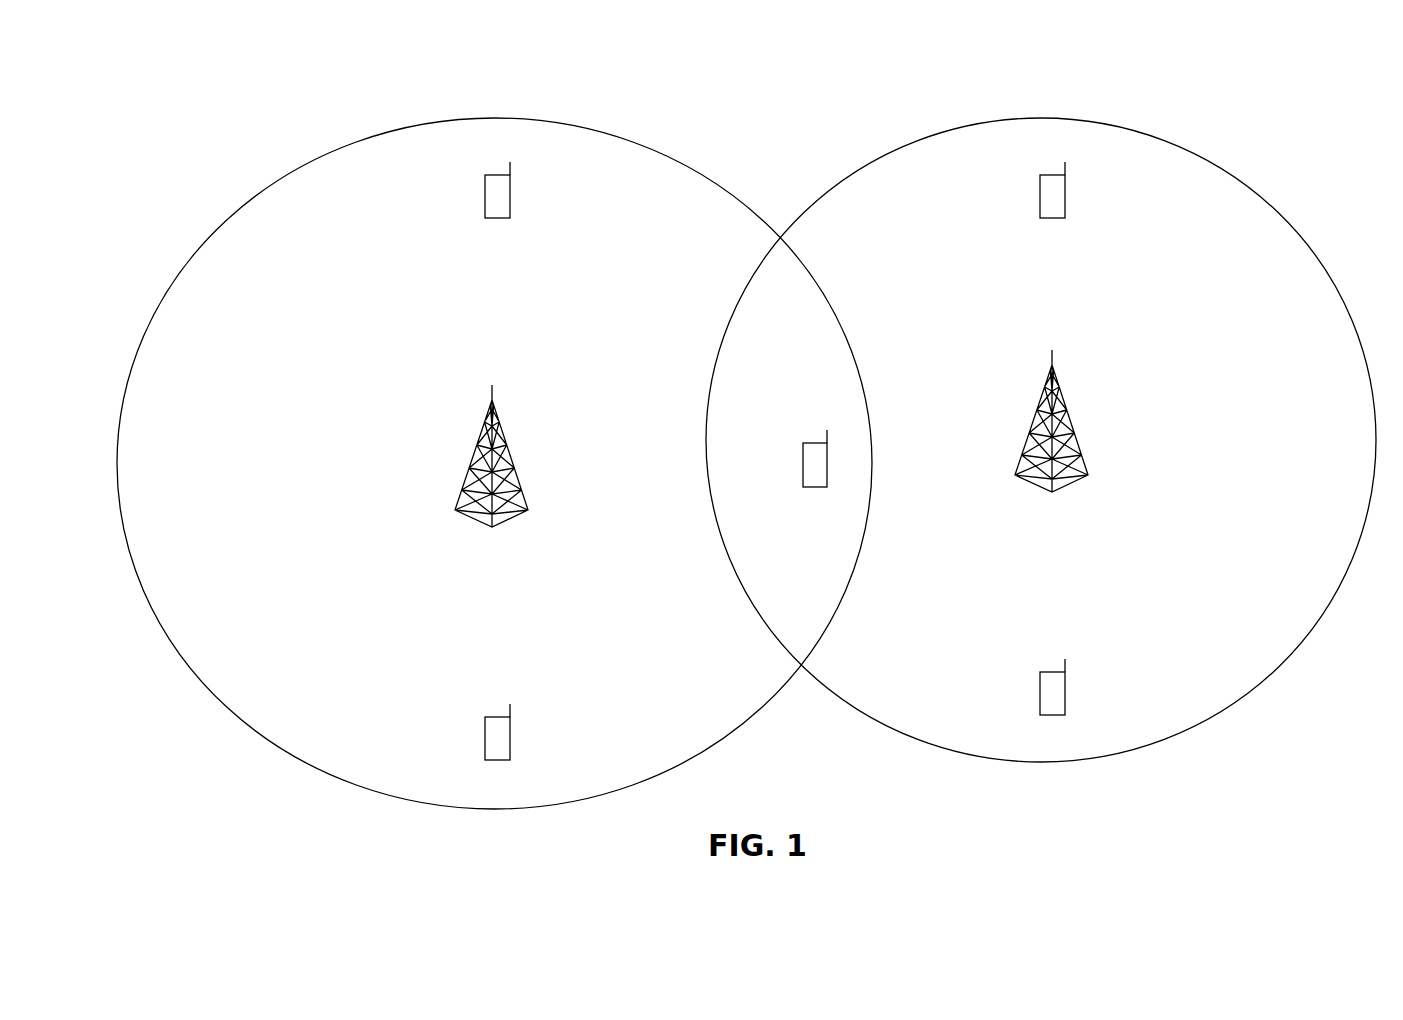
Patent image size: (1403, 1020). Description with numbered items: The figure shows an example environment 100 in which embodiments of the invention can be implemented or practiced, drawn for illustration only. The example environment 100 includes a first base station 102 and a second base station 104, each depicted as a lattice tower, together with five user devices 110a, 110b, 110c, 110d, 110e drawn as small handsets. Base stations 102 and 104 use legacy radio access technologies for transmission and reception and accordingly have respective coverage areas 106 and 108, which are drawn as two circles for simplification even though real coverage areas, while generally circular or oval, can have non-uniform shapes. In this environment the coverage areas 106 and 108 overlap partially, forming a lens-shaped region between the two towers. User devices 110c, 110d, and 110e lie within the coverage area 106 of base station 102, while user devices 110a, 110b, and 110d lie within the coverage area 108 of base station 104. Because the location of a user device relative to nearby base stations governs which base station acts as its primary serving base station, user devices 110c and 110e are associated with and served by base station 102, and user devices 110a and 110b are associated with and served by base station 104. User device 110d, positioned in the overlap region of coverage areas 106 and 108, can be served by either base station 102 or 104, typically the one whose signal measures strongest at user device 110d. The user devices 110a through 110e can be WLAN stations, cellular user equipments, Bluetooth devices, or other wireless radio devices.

The example environment 100 is at (1312, 114).
The first base station 102 is at (472, 460).
The second base station 104 is at (1031, 423).
The coverage area 106 is at (232, 217).
The coverage area 108 is at (897, 149).
The user device 110a is at (1067, 185).
The user device 110b is at (1067, 683).
The user device 110c is at (512, 727).
The user device 110d is at (817, 488).
The user device 110e is at (512, 185).